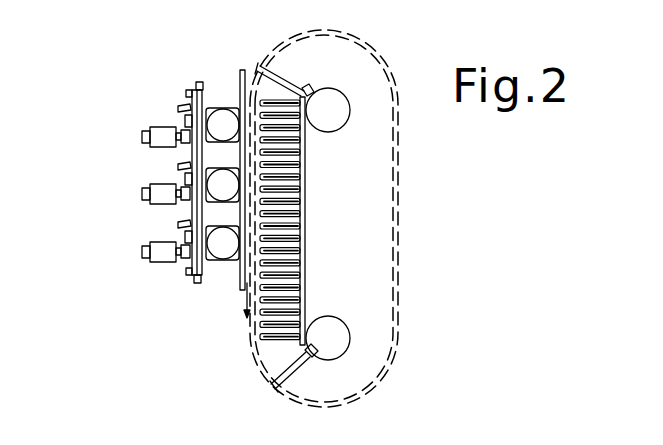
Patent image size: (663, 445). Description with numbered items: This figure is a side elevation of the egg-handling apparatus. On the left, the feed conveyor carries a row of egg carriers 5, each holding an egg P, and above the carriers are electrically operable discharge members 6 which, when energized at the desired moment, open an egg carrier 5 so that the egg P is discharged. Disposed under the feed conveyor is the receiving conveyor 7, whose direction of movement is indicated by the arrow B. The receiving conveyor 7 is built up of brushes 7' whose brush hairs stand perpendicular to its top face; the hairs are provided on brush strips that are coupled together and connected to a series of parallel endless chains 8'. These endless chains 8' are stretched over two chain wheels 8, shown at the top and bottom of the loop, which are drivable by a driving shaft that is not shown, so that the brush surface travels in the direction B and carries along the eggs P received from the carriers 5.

The egg carrier 5 is at (193, 102).
The discharge member 6 is at (164, 250).
The receiving conveyor 7 is at (261, 376).
The brushes 7' is at (265, 58).
The chain wheel 8 is at (375, 357).
The endless chain 8' is at (384, 150).
The egg P is at (228, 247).
The direction of movement B is at (241, 317).